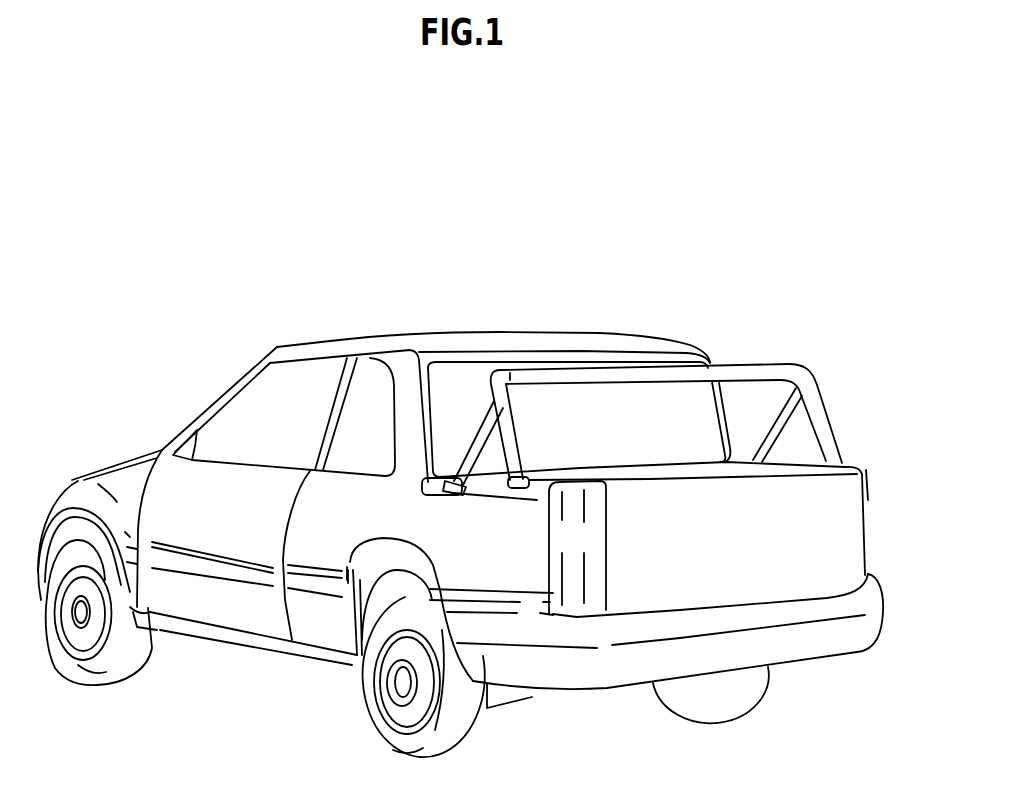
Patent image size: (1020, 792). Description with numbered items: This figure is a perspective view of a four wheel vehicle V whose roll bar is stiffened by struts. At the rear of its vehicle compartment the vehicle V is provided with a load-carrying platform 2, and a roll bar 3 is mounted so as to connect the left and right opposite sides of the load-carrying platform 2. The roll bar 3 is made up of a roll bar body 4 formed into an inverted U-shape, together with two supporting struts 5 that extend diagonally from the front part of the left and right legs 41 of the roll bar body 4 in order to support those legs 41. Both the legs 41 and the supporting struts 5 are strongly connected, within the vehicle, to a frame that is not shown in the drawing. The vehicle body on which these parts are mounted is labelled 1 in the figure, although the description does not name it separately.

The four wheel vehicle V is at (311, 336).
The vehicle body (cab) 1 is at (238, 405).
The load-carrying platform 2 is at (463, 380).
The roll bar 3 is at (825, 395).
The roll bar body 4 is at (618, 386).
The legs 41 is at (517, 448).
The supporting struts 5 is at (477, 431).